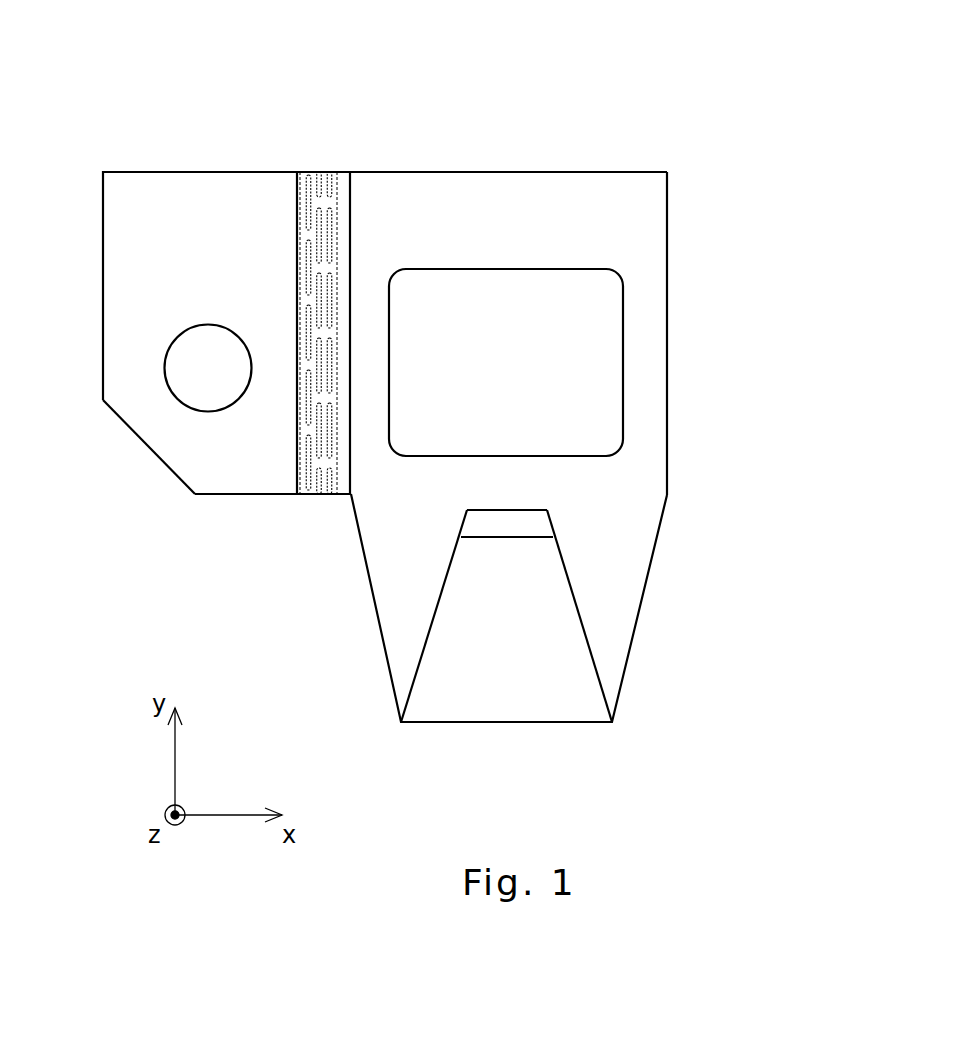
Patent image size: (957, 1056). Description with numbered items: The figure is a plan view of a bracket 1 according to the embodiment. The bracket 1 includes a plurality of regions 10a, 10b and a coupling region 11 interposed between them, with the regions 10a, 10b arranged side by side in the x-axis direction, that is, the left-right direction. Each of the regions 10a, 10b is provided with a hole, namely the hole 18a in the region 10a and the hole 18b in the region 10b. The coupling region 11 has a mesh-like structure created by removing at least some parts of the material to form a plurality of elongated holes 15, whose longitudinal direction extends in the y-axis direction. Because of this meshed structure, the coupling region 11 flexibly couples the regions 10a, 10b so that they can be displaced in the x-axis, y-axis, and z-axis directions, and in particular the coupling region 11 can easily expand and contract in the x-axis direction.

The bracket 1 is at (665, 95).
The region 10a is at (154, 439).
The region 10b is at (663, 425).
The coupling region 11 is at (320, 511).
The elongated holes 15 is at (305, 185).
The hole 18a is at (177, 362).
The hole 18b is at (612, 298).